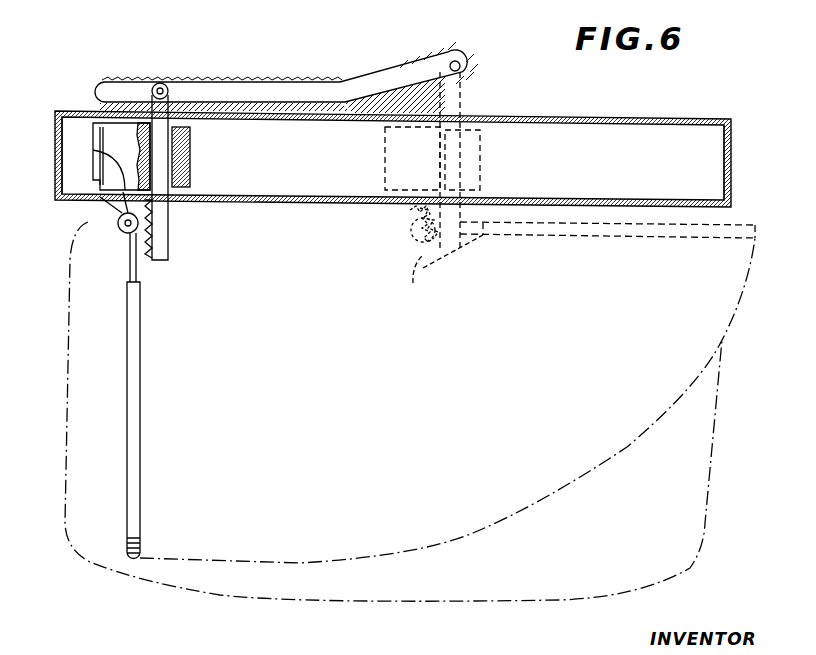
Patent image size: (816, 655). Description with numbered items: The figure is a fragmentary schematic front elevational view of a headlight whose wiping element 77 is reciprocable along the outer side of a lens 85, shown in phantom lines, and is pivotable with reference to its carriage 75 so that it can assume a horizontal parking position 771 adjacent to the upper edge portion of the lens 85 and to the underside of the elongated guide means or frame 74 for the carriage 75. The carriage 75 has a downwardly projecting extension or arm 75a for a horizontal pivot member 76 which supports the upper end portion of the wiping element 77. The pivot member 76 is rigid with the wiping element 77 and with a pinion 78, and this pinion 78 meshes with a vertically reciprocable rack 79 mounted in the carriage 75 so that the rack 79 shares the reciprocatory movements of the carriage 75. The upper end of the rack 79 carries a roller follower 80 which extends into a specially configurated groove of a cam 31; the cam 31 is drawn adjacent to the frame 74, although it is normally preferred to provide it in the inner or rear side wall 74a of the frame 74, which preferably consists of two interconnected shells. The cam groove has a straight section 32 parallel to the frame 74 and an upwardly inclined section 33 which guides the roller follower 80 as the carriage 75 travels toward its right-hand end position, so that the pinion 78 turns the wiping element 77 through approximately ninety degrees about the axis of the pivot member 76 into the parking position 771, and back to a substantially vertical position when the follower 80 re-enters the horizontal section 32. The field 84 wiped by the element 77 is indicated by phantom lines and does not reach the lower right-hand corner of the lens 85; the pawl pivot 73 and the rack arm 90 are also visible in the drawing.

The hatched shading region 31 is at (322, 76).
The operating lever 32 is at (218, 98).
The inclined lever arm 33 is at (395, 80).
The pawl pivot 73 is at (121, 233).
The guide means or frame 74 is at (662, 115).
The inner or rear side wall 74a is at (729, 160).
The carriage 75 is at (192, 161).
The downwardly projecting extension or arm 75a is at (62, 152).
The pivot member 76 is at (118, 226).
The wiping element 77 is at (136, 407).
The guide 771 is at (596, 240).
The pinion 78 is at (447, 272).
The rack 79 is at (482, 160).
The roller follower 80 is at (470, 64).
The field 84 is at (487, 492).
The lens 85 is at (362, 592).
The rack arm 90 is at (160, 82).